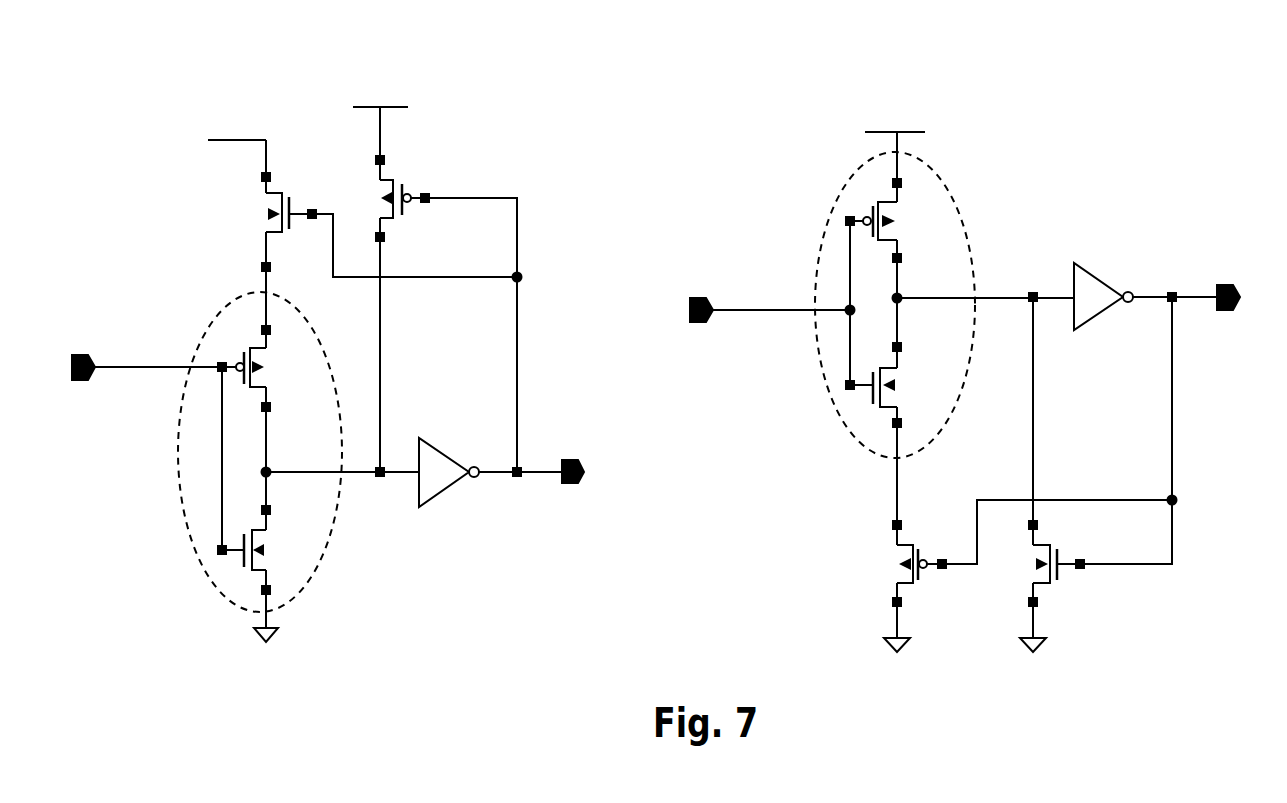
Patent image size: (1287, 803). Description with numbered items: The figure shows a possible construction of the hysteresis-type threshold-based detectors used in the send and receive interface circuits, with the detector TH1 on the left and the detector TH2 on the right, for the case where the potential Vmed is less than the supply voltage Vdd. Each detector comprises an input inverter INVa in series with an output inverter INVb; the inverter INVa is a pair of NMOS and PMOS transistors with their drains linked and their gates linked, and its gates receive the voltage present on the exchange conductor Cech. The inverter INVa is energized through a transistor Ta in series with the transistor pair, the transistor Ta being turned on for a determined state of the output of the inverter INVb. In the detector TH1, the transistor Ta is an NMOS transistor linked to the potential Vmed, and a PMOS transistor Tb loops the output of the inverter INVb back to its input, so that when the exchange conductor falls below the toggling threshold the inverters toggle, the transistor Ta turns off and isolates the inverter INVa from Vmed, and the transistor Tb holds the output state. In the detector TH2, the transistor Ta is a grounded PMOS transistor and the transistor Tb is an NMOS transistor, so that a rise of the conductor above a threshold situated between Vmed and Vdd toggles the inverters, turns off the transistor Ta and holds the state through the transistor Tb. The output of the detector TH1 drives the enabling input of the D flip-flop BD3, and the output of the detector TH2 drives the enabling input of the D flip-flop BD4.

The threshold-based detector TH1 is at (328, 339).
The threshold-based detector TH2 is at (965, 350).
The supply voltage Vdd is at (665, 122).
The intermediate potential Vmed is at (201, 136).
The transistor Ta is at (598, 393).
The transistor Tb is at (727, 385).
The input inverter INVa is at (562, 382).
The output inverter INVb is at (776, 378).
The exchange conductor Cech is at (392, 324).
The D flip-flop BD4 is at (593, 458).
The D flip-flop BD3 is at (1234, 285).